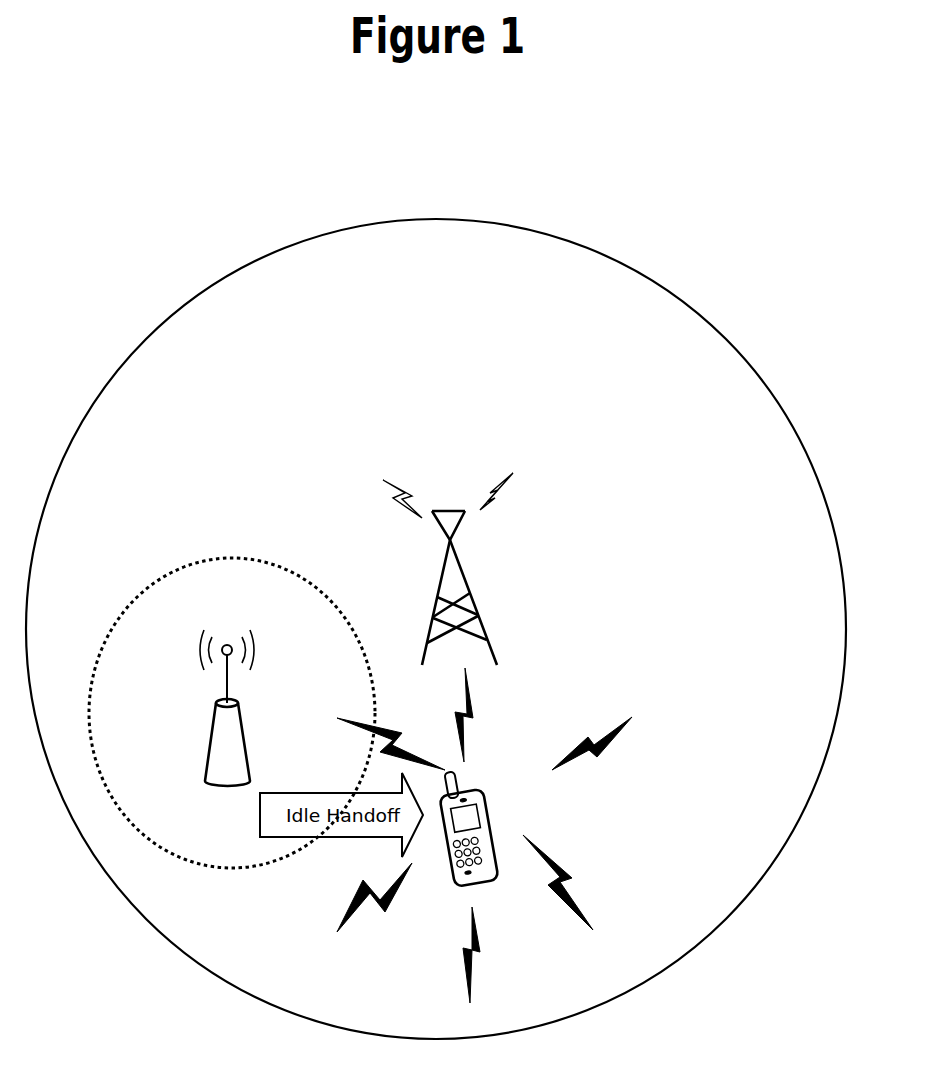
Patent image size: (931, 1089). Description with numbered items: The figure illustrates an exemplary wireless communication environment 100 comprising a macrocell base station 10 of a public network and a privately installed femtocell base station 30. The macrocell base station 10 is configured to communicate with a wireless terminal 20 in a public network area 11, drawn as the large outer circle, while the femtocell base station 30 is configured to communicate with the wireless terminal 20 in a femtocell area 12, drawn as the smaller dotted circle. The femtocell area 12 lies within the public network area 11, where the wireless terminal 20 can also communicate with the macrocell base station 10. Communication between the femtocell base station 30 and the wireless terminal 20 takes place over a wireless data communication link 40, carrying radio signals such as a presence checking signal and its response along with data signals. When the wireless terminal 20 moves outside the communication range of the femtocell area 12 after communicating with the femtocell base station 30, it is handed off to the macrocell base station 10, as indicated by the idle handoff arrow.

The wireless communication environment 100 is at (211, 196).
The public network area 11 is at (711, 319).
The femtocell area 12 is at (266, 560).
The macrocell base station 10 is at (486, 623).
The wireless terminal 20 is at (481, 797).
The femtocell base station 30 is at (247, 753).
The wireless data communication link 40 is at (338, 922).